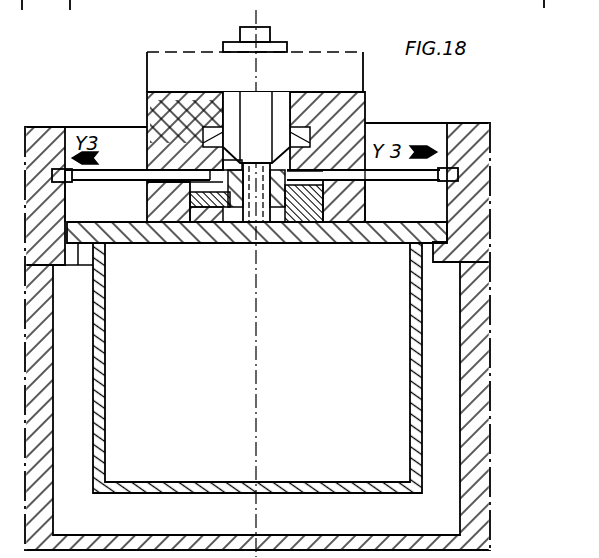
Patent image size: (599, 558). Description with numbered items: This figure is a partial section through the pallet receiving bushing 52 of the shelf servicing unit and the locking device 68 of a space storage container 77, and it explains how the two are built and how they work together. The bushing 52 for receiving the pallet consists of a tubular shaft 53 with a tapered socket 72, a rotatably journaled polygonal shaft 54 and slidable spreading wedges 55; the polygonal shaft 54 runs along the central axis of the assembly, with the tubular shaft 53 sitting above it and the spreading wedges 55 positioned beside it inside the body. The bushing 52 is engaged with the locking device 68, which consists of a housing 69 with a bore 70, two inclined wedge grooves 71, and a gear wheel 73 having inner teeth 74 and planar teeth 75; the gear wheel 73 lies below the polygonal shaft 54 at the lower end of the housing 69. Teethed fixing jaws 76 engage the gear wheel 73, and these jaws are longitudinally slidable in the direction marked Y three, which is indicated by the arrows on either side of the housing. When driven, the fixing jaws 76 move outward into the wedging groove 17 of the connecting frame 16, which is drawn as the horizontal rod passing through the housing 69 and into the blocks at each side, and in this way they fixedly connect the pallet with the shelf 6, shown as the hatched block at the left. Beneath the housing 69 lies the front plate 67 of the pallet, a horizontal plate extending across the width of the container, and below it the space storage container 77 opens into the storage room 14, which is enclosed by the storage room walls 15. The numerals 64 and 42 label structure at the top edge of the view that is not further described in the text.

The shelf 6 is at (40, 147).
The storage room 14 is at (273, 336).
The storage room walls 15 is at (480, 362).
The connecting frame 16 is at (472, 135).
The wedging groove 17 is at (455, 172).
The upper frame member 42 is at (73, 15).
The bushing 52 is at (183, 62).
The tubular shaft 53 is at (223, 47).
The polygonal shaft 54 is at (240, 29).
The spreading wedges 55 is at (290, 127).
The frame member 64 is at (26, 15).
The front plate 67 is at (167, 237).
The locking device 68 is at (352, 96).
The housing 69 is at (363, 110).
The bore 70 is at (290, 147).
The inclined wedge grooves 71 is at (228, 135).
The tapered socket 72 is at (232, 166).
The gear wheel 73 is at (214, 225).
The inner teeth 74 is at (265, 224).
The planar teeth 75 is at (305, 224).
The fixing jaws 76 is at (127, 175).
The space storage container 77 is at (413, 319).